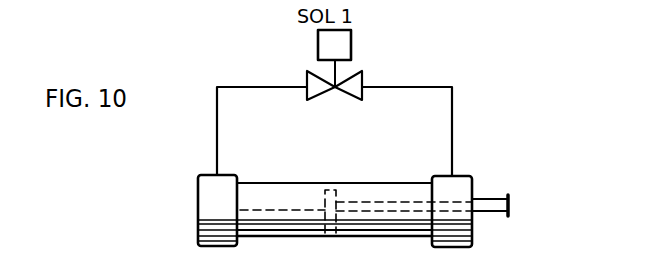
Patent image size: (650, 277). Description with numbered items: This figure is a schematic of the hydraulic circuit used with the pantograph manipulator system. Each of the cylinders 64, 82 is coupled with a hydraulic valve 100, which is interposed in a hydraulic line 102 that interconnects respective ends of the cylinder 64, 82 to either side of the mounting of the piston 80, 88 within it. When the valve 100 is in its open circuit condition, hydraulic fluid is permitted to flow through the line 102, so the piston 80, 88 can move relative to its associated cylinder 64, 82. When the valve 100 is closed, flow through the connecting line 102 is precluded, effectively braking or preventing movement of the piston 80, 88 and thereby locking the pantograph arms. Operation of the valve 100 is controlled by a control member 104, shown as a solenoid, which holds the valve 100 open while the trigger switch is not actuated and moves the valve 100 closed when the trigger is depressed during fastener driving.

The hydraulic line 102 is at (235, 86).
The control member 104 is at (337, 48).
The hydraulic valve 100 is at (361, 72).
The hydraulic cylinder 64 is at (270, 211).
The piston-and-cylinder assembly 82 is at (219, 203).
The piston 80 is at (524, 174).
The piston portion 88 is at (488, 199).